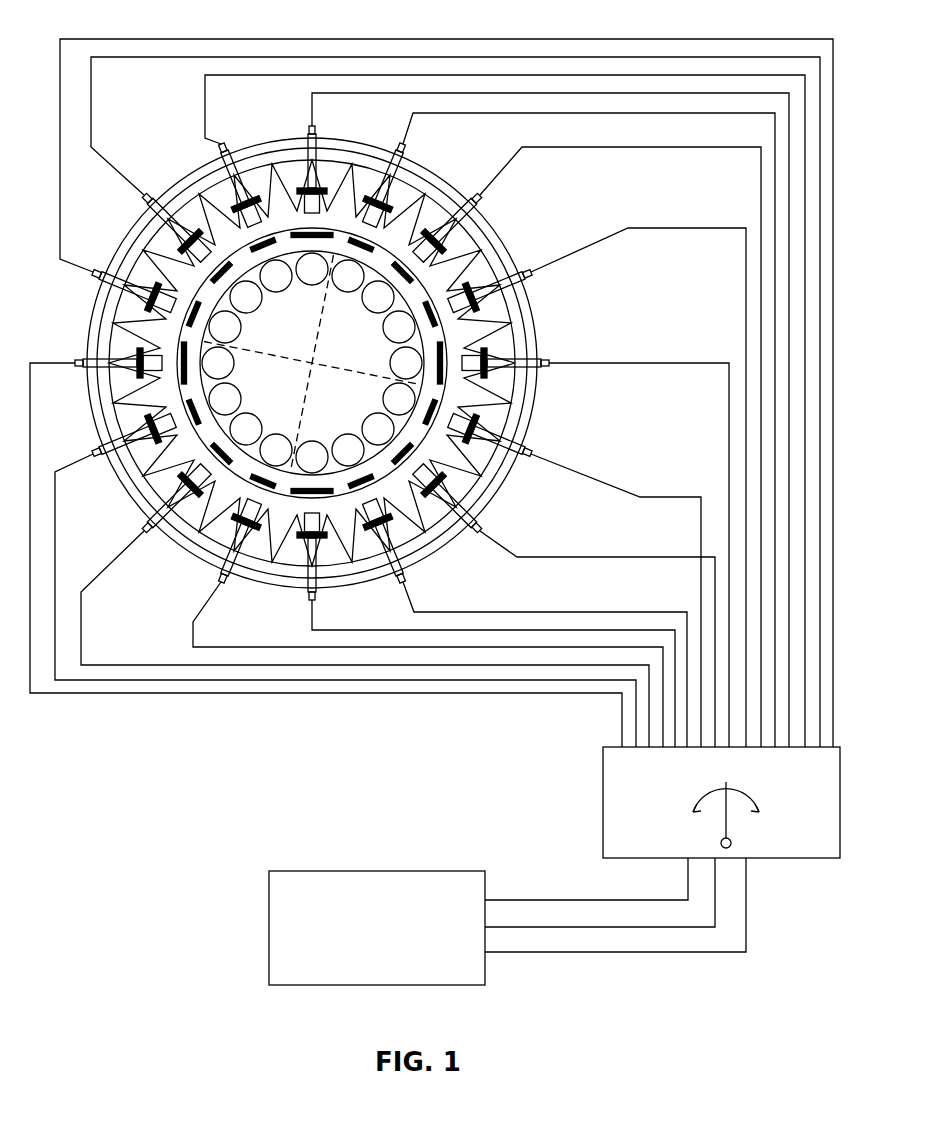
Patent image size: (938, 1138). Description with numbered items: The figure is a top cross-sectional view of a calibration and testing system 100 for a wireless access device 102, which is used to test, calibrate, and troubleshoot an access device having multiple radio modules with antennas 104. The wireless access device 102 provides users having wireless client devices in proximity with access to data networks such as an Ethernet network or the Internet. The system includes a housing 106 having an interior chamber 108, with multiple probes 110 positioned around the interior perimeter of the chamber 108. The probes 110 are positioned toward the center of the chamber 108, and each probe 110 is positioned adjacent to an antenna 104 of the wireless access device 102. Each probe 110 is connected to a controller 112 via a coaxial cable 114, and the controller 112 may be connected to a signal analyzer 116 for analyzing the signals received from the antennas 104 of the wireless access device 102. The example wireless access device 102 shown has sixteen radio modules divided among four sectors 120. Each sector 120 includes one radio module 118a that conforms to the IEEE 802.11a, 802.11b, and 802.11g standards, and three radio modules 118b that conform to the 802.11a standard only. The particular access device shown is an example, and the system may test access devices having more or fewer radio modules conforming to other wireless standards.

The calibration and testing system 100 is at (197, 780).
The wireless access device 102 is at (352, 333).
The antennas 104 is at (312, 218).
The housing 106 is at (532, 458).
The interior chamber 108 is at (190, 235).
The probes 110 is at (178, 232).
The controller 112 is at (784, 862).
The coaxial cable 114 is at (744, 708).
The signal analyzer 116 is at (265, 925).
The radio module conforming to 802.11a, b, g 118a is at (273, 433).
The radio modules conforming to 802.11a only 118b is at (255, 303).
The sectors 120 is at (274, 354).